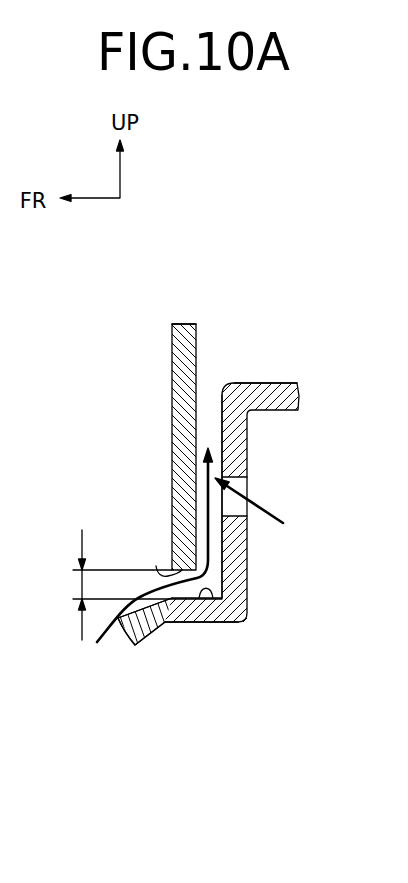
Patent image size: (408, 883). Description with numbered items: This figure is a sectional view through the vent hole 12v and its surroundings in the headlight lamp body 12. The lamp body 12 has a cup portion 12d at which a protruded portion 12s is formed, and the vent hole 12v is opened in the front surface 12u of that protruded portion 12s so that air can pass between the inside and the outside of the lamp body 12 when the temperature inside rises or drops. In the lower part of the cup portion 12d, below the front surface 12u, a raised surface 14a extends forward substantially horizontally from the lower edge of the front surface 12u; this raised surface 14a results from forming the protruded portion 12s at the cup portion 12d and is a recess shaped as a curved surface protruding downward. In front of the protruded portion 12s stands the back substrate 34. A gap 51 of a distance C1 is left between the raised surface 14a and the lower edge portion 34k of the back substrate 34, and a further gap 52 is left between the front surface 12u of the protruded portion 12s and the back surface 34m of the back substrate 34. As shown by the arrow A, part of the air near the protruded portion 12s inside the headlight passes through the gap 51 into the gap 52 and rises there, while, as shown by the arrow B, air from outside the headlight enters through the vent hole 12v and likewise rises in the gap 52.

The lamp body 12 is at (144, 668).
The protruded portion 12s is at (262, 373).
The front surface 12u is at (216, 420).
The vent hole 12v is at (241, 479).
The cup portion 12d is at (162, 625).
The raised surface 14a is at (217, 623).
The back substrate 34 is at (160, 357).
The back surface 34m is at (198, 348).
The lower edge portion 34k is at (156, 566).
The gap 51 is at (138, 563).
The gap 52 is at (196, 428).
The arrow A is at (147, 557).
The arrow B is at (263, 509).
The distance C1 is at (129, 585).